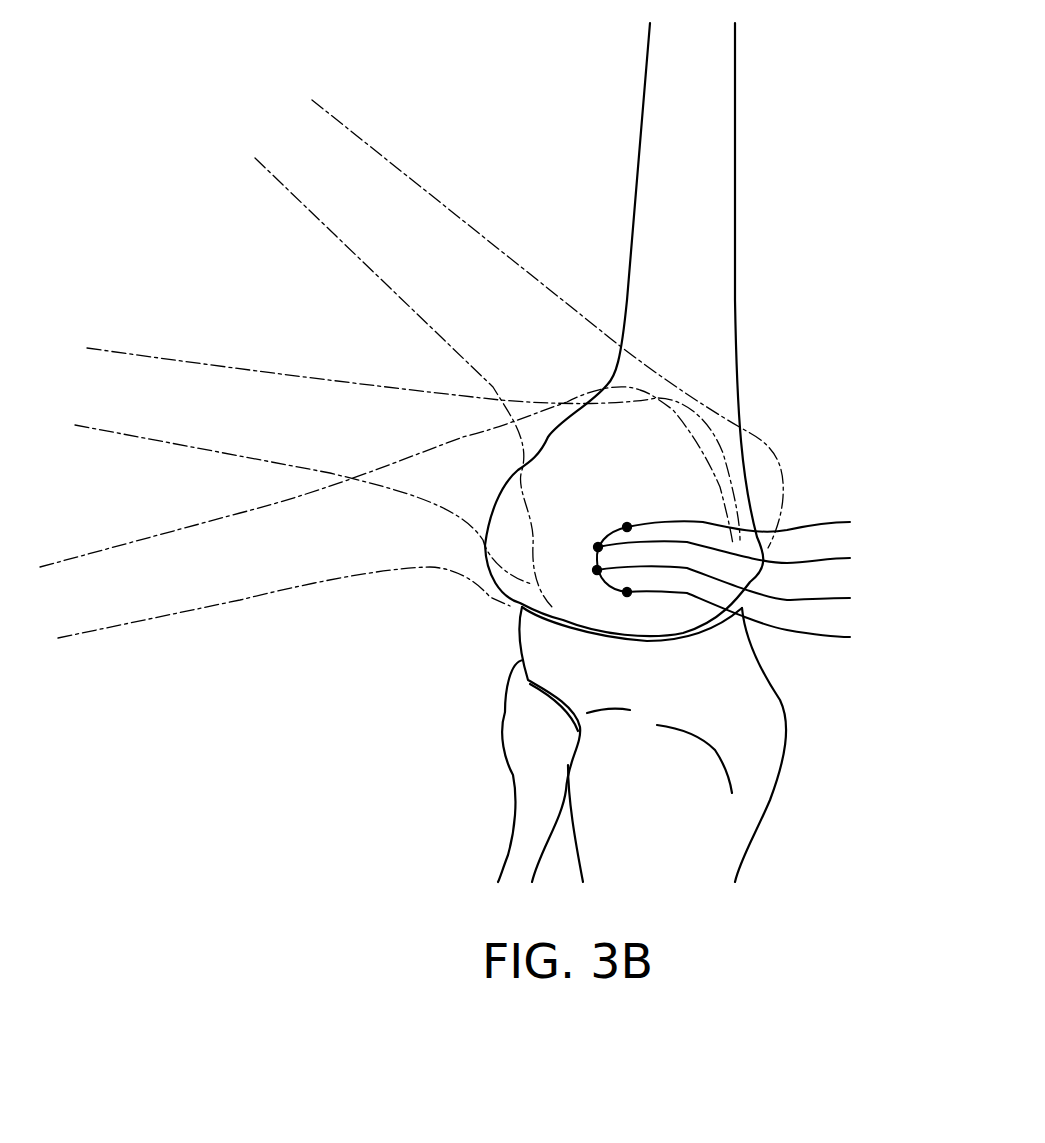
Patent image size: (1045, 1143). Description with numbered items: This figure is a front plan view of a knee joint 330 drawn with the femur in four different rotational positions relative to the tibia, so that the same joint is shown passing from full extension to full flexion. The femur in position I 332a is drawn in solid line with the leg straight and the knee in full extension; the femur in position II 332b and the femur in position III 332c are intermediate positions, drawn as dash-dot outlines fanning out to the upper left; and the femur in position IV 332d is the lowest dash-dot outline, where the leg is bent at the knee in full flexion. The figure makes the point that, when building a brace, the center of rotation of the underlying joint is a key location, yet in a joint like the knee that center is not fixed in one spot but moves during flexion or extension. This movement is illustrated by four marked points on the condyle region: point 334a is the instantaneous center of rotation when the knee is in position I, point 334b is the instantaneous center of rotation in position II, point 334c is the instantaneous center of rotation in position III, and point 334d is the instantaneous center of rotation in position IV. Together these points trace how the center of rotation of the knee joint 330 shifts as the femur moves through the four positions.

The knee joint 330 is at (831, 444).
The femur in position I 332a is at (735, 128).
The femur in position II 332b is at (408, 182).
The femur in position III 332c is at (183, 363).
The femur in position IV 332d is at (367, 575).
The instantaneous center of rotation for position I 334a is at (754, 542).
The instantaneous center of rotation for position II 334b is at (742, 552).
The instantaneous center of rotation for position III 334c is at (739, 586).
The instantaneous center of rotation for position IV 334d is at (762, 620).